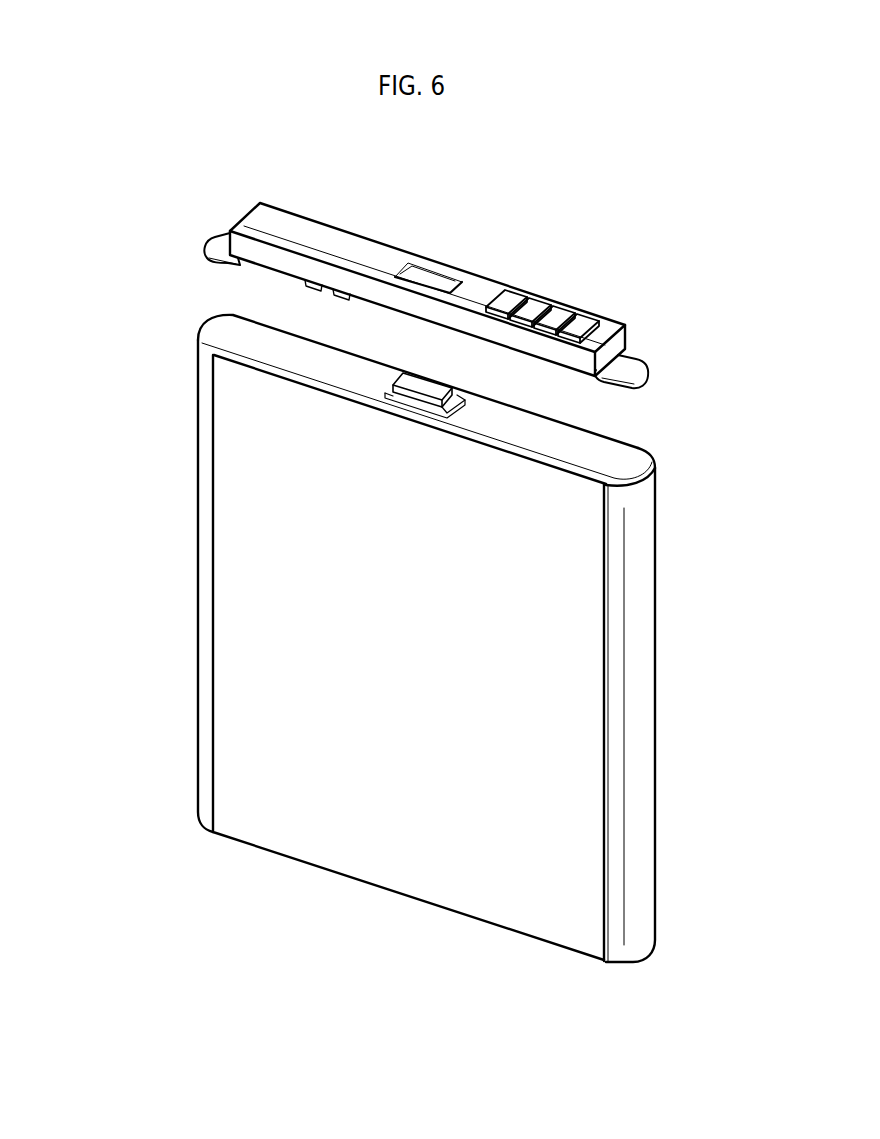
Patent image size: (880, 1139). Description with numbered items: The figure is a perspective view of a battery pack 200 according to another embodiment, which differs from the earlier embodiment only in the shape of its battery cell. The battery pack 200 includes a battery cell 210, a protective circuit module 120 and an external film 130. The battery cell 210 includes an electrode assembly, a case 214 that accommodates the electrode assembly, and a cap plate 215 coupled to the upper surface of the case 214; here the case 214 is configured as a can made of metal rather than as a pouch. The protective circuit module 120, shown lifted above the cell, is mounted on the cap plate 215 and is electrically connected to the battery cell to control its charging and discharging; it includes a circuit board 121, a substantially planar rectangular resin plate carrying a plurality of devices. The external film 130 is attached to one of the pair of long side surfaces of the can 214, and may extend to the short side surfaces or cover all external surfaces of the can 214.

The battery pack 200 is at (118, 174).
The battery cell 210 is at (187, 414).
The cap plate 215 is at (639, 461).
The case 214 is at (640, 569).
The external film 130 is at (228, 582).
The protective circuit module 120 is at (690, 275).
The circuit board 121 is at (323, 236).